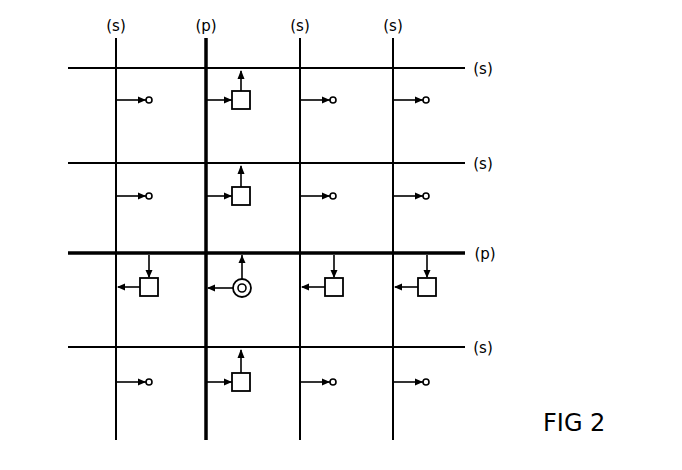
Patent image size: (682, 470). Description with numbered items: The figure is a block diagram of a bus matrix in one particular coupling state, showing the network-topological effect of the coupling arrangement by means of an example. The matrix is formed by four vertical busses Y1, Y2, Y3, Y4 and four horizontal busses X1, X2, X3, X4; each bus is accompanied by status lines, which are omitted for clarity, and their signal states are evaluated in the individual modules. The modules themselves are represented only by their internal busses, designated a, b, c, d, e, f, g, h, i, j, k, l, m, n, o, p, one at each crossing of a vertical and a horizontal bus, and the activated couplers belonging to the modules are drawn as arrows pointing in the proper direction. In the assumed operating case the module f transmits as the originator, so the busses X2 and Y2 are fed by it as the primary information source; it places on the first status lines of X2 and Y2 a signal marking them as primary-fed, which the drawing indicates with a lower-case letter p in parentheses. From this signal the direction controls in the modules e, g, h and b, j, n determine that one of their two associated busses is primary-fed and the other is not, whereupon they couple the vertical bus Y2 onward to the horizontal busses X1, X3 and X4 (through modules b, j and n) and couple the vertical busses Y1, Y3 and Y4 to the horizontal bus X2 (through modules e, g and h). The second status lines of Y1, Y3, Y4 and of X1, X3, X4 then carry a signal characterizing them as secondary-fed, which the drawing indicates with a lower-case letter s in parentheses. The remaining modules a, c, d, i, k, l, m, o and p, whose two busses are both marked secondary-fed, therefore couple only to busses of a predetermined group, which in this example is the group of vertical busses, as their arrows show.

The module internal bus a is at (136, 400).
The module internal bus b is at (228, 384).
The module internal bus c is at (320, 400).
The module internal bus d is at (413, 400).
The module internal bus e is at (137, 290).
The originating module f is at (229, 290).
The module internal bus g is at (322, 290).
The module internal bus h is at (415, 290).
The module internal bus i is at (135, 214).
The module internal bus j is at (228, 199).
The module internal bus k is at (320, 214).
The module internal bus l is at (412, 214).
The module internal bus m is at (137, 118).
The module internal bus n is at (228, 104).
The module internal bus o is at (320, 118).
The module internal bus p is at (413, 118).
The horizontal bus X1 is at (252, 347).
The horizontal bus X2 is at (252, 253).
The horizontal bus X3 is at (252, 163).
The horizontal bus X4 is at (252, 68).
The vertical bus Y1 is at (115, 251).
The vertical bus Y2 is at (205, 251).
The vertical bus Y3 is at (299, 251).
The vertical bus Y4 is at (392, 251).